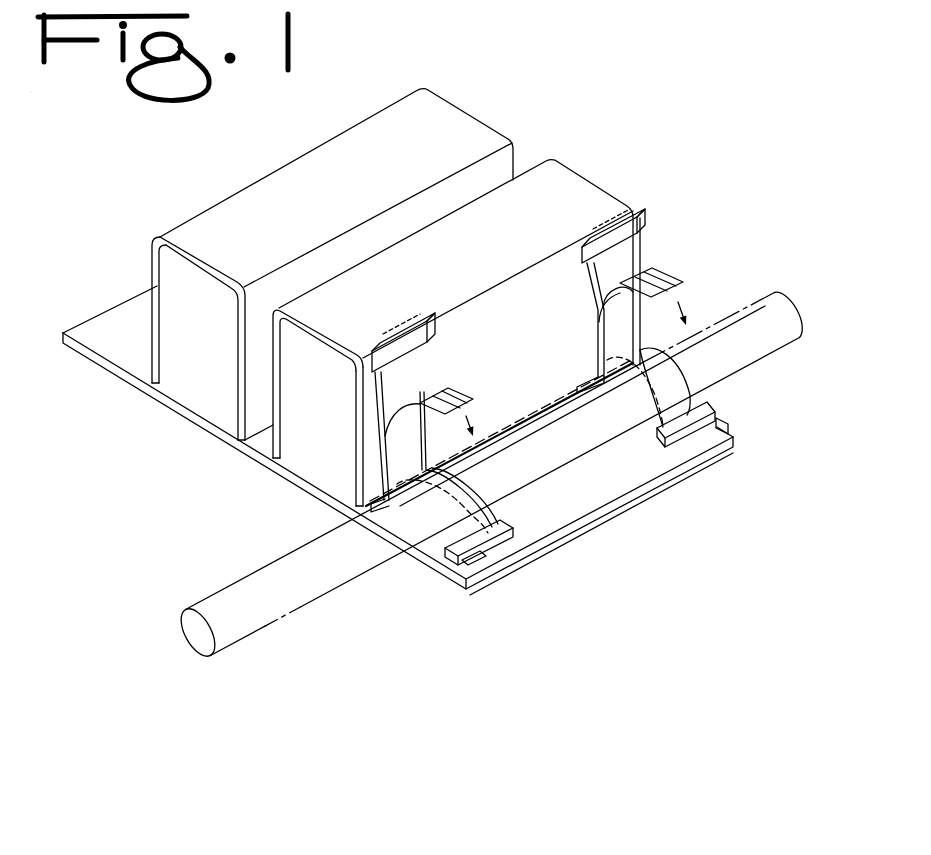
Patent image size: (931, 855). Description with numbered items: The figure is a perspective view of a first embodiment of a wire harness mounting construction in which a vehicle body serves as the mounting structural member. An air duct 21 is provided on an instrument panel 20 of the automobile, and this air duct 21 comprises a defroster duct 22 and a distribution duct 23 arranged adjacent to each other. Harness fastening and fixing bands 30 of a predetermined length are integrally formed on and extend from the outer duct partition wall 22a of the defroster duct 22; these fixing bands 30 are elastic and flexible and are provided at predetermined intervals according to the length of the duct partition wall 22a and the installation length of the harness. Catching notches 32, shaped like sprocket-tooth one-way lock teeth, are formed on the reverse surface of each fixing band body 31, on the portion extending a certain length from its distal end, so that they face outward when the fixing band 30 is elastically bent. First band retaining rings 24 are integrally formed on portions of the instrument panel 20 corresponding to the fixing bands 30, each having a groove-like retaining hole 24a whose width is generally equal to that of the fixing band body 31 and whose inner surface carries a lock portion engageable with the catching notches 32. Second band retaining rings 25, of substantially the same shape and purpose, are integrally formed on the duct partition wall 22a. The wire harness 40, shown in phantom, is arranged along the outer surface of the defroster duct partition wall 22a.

The instrument panel 20 is at (88, 308).
The air duct 21 is at (153, 257).
The defroster duct 22 is at (297, 378).
The duct partition wall 22a is at (360, 453).
The distribution duct 23 is at (187, 317).
The first band retaining ring 24 is at (466, 557).
The retaining hole 24a is at (476, 566).
The second band retaining ring 25 is at (427, 322).
The fixing band 30 is at (483, 388).
The fixing band body 31 is at (340, 486).
The catching notches 32 is at (452, 385).
The wire harness 40 is at (175, 629).